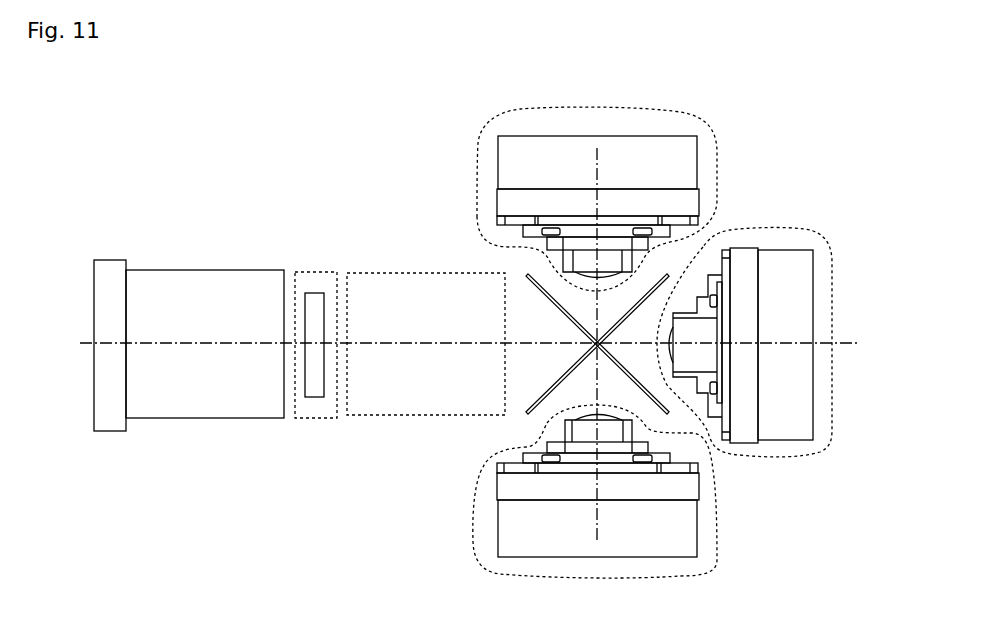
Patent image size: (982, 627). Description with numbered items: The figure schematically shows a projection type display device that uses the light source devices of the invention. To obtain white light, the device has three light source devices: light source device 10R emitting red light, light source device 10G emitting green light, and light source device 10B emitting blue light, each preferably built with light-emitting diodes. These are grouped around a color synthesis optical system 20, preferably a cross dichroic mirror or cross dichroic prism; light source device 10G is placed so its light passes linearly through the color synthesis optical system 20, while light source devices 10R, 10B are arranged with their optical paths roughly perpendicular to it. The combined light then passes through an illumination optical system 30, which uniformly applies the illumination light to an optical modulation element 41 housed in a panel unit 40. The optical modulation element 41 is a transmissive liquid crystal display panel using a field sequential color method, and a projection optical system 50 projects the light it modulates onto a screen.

The light source device 10R is at (597, 182).
The light source device 10G is at (752, 331).
The light source device 10B is at (595, 509).
The color synthesis optical system 20 is at (527, 412).
The illumination optical system 30 is at (405, 273).
The panel unit 40 is at (315, 272).
The optical modulation element 41 is at (317, 388).
The projection optical system 50 is at (210, 273).